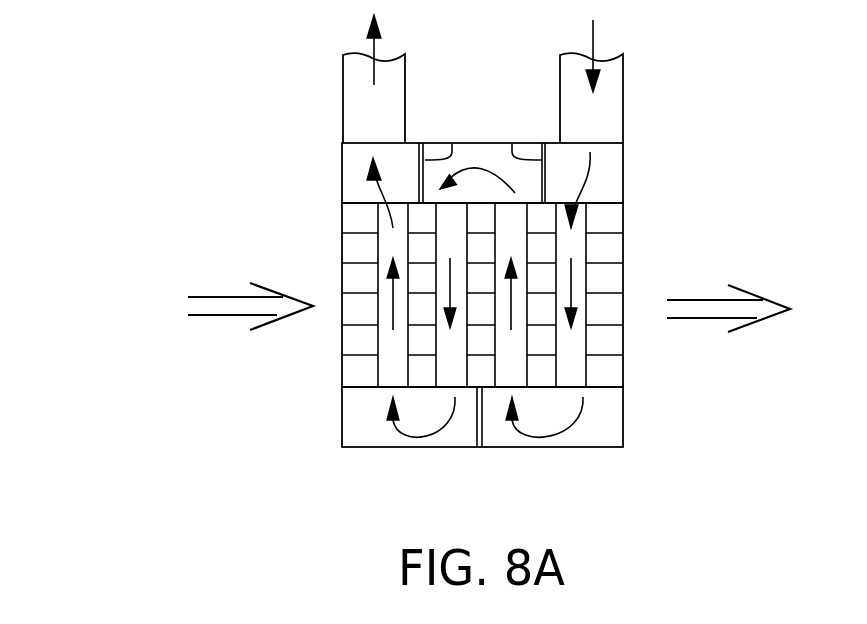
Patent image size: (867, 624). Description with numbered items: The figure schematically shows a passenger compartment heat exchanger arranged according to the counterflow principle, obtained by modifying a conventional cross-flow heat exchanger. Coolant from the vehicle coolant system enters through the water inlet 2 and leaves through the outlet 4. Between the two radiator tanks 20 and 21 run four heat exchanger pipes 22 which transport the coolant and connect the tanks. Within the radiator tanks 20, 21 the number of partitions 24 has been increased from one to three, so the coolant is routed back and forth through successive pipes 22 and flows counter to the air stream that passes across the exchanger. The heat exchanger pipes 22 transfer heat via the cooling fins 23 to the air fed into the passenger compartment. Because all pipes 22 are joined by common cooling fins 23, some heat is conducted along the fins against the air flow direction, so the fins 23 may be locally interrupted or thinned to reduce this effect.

The water inlet 2 is at (623, 80).
The outlet 4 is at (405, 102).
The radiator tank 20 is at (623, 180).
The radiator tank 21 is at (623, 412).
The heat exchanger pipe 22 is at (600, 218).
The cooling fin 23 is at (603, 257).
The partition 24 is at (452, 144).